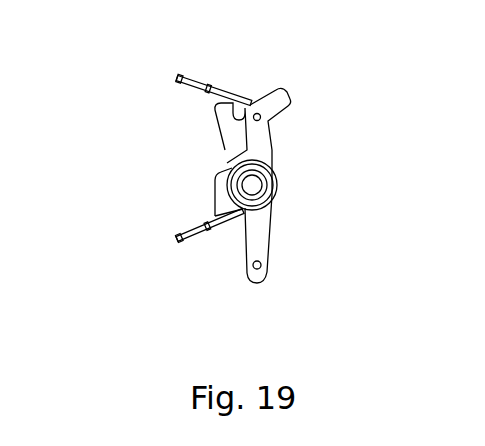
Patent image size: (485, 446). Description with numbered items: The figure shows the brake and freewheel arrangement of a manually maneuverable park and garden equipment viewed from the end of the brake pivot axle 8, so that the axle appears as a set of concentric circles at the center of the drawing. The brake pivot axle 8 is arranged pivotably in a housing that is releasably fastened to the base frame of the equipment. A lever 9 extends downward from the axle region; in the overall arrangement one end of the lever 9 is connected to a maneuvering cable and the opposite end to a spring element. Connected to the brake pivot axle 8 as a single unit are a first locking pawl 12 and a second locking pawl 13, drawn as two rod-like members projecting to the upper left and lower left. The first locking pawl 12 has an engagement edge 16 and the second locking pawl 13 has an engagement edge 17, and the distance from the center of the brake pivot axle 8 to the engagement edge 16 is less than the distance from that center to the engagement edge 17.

The brake pivot axle 8 is at (252, 185).
The lever 9 is at (263, 227).
The first locking pawl 12 is at (206, 230).
The second locking pawl 13 is at (210, 84).
The engagement edge 16 is at (177, 239).
The engagement edge 17 is at (177, 79).